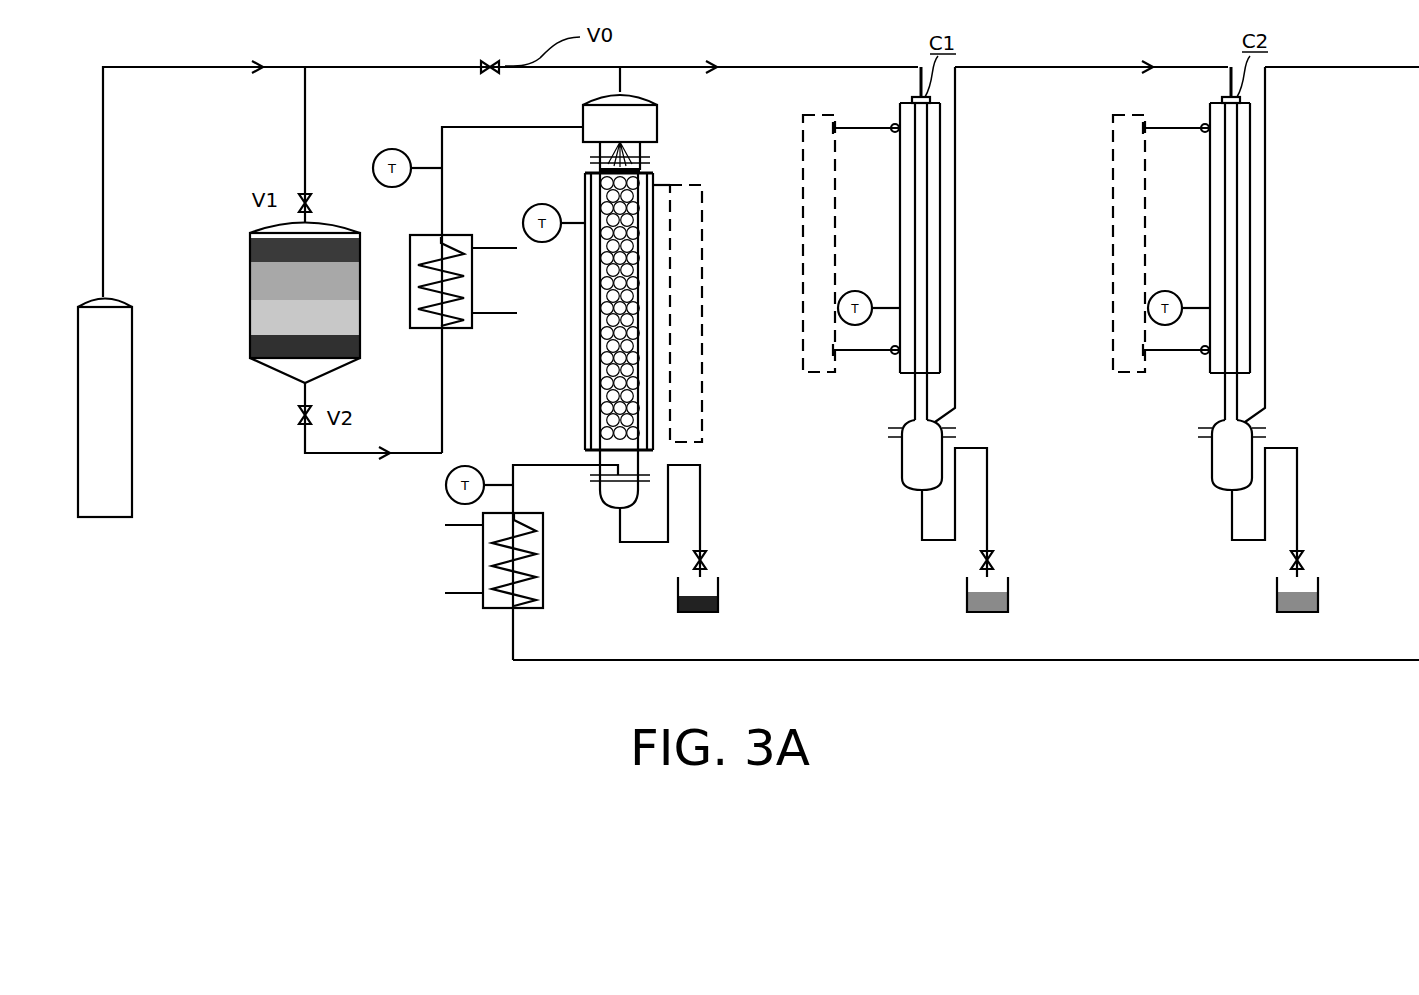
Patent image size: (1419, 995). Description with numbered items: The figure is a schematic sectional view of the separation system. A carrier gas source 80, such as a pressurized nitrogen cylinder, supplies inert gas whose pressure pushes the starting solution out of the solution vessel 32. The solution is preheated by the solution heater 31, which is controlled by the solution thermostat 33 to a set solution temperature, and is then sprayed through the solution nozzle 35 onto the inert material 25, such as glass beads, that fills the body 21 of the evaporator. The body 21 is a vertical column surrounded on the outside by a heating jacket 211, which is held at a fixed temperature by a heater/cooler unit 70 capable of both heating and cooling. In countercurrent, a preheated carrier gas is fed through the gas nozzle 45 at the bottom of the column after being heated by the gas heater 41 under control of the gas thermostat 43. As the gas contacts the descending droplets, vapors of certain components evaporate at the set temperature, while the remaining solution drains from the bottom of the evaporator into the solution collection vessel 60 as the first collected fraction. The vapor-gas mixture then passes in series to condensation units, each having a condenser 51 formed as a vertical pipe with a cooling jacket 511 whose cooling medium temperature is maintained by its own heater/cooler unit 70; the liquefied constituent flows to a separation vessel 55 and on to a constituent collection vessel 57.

The body 21 is at (640, 258).
The inert material 25 is at (633, 334).
The solution heater 31 is at (448, 249).
The solution vessel 32 is at (297, 263).
The solution thermostat 33 is at (395, 150).
The solution nozzle 35 is at (622, 128).
The gas heater 41 is at (530, 560).
The gas thermostat 43 is at (448, 491).
The gas nozzle 45 is at (613, 478).
The condenser 51 is at (927, 285).
The separation vessel 55 is at (938, 455).
The constituent collection vessel 57 is at (1003, 591).
The solution collection vessel 60 is at (712, 592).
The heater/cooler unit 70 is at (697, 338).
The carrier gas source 80 is at (98, 490).
The heating jacket 211 is at (655, 420).
The cooling jacket 511 is at (940, 110).